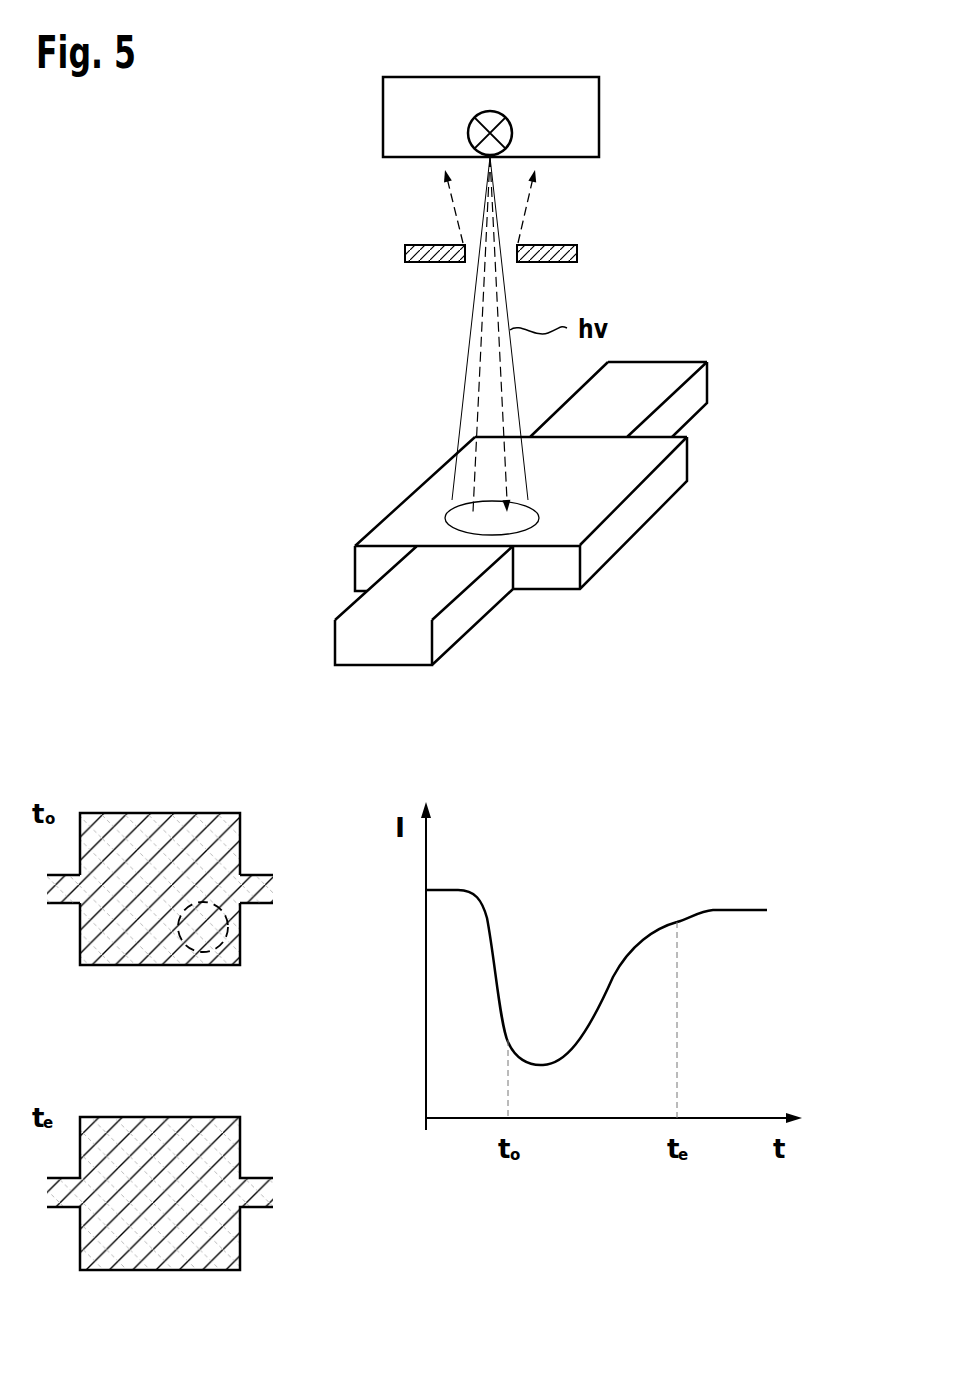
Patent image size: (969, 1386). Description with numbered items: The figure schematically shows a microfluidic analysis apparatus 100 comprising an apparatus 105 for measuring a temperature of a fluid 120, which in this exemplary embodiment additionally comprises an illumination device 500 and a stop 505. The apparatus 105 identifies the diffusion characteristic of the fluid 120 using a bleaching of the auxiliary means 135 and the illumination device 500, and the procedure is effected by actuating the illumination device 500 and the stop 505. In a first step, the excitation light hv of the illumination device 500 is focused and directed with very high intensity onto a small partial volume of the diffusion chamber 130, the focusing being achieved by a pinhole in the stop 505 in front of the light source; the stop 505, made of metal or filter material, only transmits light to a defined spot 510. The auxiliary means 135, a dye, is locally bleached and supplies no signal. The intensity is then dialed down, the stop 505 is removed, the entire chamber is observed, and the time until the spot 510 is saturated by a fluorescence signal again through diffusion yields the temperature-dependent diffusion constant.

The microfluidic analysis apparatus 100 is at (421, 117).
The apparatus for measuring a temperature of a fluid 105 is at (407, 110).
The illumination device 500 is at (468, 138).
The stop 505 is at (413, 253).
The spot 510 is at (447, 517).
The fluid 120 is at (429, 695).
The auxiliary means 135 is at (640, 462).
The diffusion chamber 130 is at (650, 497).